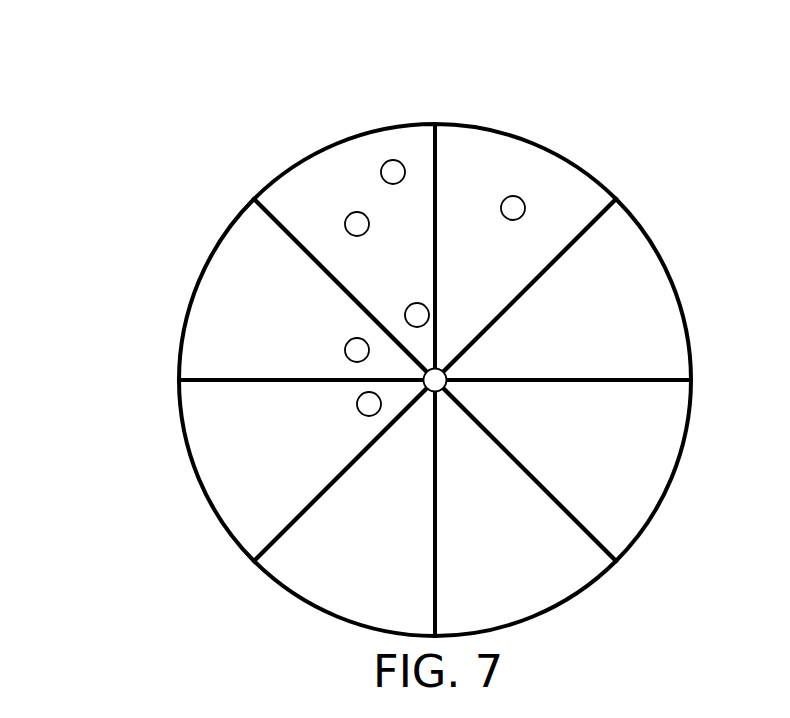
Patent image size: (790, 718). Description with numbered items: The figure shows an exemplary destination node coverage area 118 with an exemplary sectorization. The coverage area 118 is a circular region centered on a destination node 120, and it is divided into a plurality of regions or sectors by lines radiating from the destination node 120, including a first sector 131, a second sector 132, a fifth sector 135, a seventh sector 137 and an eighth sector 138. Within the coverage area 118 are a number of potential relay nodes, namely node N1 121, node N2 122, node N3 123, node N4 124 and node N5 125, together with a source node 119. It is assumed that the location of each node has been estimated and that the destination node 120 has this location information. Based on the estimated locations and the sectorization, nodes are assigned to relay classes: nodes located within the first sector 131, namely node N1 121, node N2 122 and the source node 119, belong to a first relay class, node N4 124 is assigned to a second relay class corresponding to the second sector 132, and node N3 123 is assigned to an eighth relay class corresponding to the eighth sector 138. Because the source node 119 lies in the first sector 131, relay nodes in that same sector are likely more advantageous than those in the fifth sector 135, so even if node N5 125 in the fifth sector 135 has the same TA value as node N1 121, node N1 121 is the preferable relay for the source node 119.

The destination node coverage area 118 is at (84, 90).
The source node 119 is at (393, 160).
The destination node 120 is at (438, 368).
The node N1 121 is at (416, 303).
The node N2 122 is at (357, 212).
The node N3 123 is at (357, 338).
The node N4 124 is at (513, 196).
The node N5 125 is at (369, 392).
The first sector 131 is at (418, 157).
The second sector 132 is at (490, 157).
The fifth sector 135 is at (527, 605).
The sector S7 137 is at (224, 494).
The eighth sector 138 is at (260, 227).